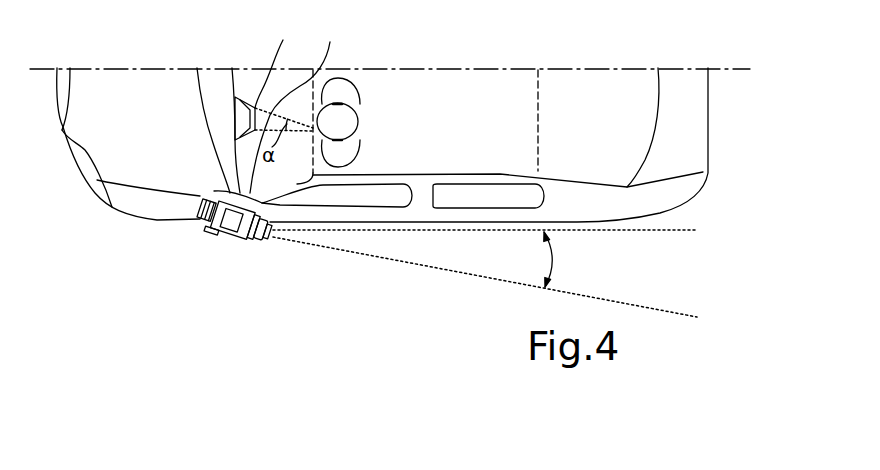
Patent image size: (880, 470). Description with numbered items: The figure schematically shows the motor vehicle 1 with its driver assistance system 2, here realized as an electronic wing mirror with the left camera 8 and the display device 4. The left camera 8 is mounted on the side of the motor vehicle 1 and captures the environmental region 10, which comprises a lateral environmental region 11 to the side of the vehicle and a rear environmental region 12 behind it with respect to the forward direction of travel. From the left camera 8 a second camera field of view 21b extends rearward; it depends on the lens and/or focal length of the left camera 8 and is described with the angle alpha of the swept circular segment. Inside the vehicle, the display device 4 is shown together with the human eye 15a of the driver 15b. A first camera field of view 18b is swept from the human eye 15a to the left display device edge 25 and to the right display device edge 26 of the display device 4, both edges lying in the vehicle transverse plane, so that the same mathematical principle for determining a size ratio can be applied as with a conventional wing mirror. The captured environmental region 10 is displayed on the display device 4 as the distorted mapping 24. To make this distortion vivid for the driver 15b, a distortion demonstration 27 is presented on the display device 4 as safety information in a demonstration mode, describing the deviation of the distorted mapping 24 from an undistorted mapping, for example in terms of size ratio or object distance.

The motor vehicle 1 is at (130, 226).
The driver assistance system 2 is at (236, 256).
The display device 4 is at (236, 97).
The left camera 8 is at (233, 242).
The environmental region 10 is at (417, 303).
The lateral environmental region 11 is at (500, 265).
The rear environmental region 12 is at (745, 287).
The human eye 15a is at (309, 135).
The driver 15b is at (373, 118).
The first camera field of view 18b is at (301, 107).
The second camera field of view 21b is at (358, 246).
The distorted mapping 24 is at (226, 122).
The left display device edge 25 is at (235, 141).
The right display device edge 26 is at (277, 63).
The distortion demonstration 27 is at (222, 87).